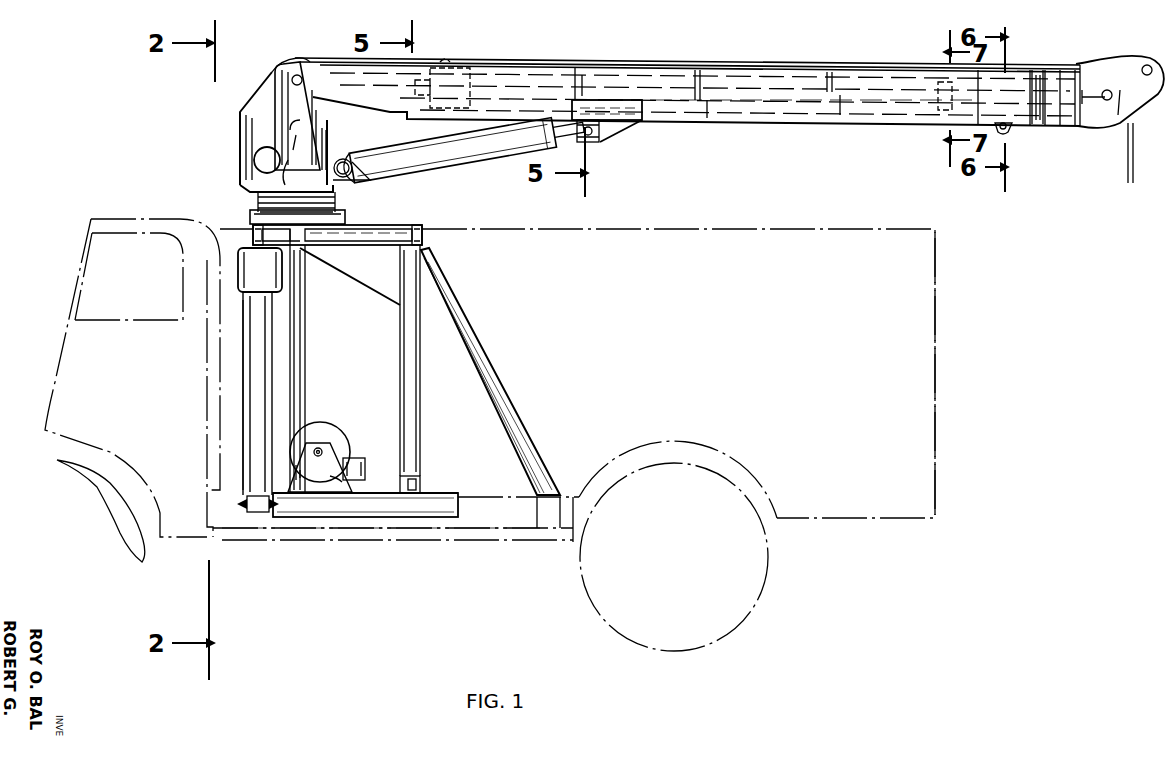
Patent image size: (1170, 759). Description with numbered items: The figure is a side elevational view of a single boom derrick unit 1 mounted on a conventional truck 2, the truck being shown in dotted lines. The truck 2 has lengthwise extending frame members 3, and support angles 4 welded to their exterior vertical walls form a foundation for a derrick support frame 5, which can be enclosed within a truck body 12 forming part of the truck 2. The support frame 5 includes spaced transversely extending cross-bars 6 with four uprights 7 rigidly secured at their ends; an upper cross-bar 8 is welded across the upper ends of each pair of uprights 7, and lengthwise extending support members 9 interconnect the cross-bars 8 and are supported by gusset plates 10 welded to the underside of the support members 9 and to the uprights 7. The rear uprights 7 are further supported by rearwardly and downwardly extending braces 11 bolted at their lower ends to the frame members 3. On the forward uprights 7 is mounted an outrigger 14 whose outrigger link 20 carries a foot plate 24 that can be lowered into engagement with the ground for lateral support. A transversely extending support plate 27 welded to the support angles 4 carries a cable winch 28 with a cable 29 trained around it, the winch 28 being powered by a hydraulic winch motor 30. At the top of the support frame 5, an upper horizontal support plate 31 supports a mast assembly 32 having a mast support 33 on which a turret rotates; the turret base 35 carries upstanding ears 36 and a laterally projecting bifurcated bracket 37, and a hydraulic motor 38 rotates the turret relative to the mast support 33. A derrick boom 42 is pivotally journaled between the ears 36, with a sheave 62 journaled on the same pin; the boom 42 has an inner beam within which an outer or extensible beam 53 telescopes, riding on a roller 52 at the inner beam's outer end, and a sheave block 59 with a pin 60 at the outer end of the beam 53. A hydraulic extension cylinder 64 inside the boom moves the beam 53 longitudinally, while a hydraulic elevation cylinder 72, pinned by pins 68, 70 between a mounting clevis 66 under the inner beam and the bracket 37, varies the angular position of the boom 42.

The single boom derrick unit 1 is at (660, 152).
The truck 2 is at (62, 308).
The frame members 3 is at (458, 542).
The support angles 4 is at (372, 518).
The derrick support frame 5 is at (492, 343).
The cross-bars 6 is at (422, 480).
The uprights 7 is at (420, 402).
The upper cross-bar 8 is at (253, 232).
The support members 9 is at (395, 225).
The gusset plates 10 is at (380, 282).
The braces 11 is at (505, 417).
The truck body 12 is at (935, 360).
The outrigger 14 is at (243, 383).
The outrigger link 20 is at (255, 430).
The foot plate 24 is at (238, 290).
The support plate 27 is at (378, 492).
The cable winch 28 is at (327, 424).
The cable 29 is at (1135, 163).
The hydraulic winch motor 30 is at (363, 458).
The upper horizontal support plate 31 is at (345, 217).
The mast assembly 32 is at (226, 133).
The mast support 33 is at (250, 195).
The base 35 is at (368, 181).
The upstanding ears 36 is at (257, 88).
The bifurcated bracket 37 is at (336, 160).
The hydraulic motor 38 is at (252, 158).
The derrick boom 42 is at (862, 122).
The roller 52 is at (1008, 133).
The outer or extensible beam 53 is at (1050, 126).
The sheave block 59 is at (1123, 60).
The pin 60 is at (1113, 98).
The sheave 62 is at (298, 58).
The hydraulic extension cylinder 64 is at (744, 112).
The mounting clevis 66 is at (622, 124).
The pin 68 is at (596, 142).
The pin 70 is at (350, 162).
The hydraulic elevation cylinder 72 is at (478, 160).